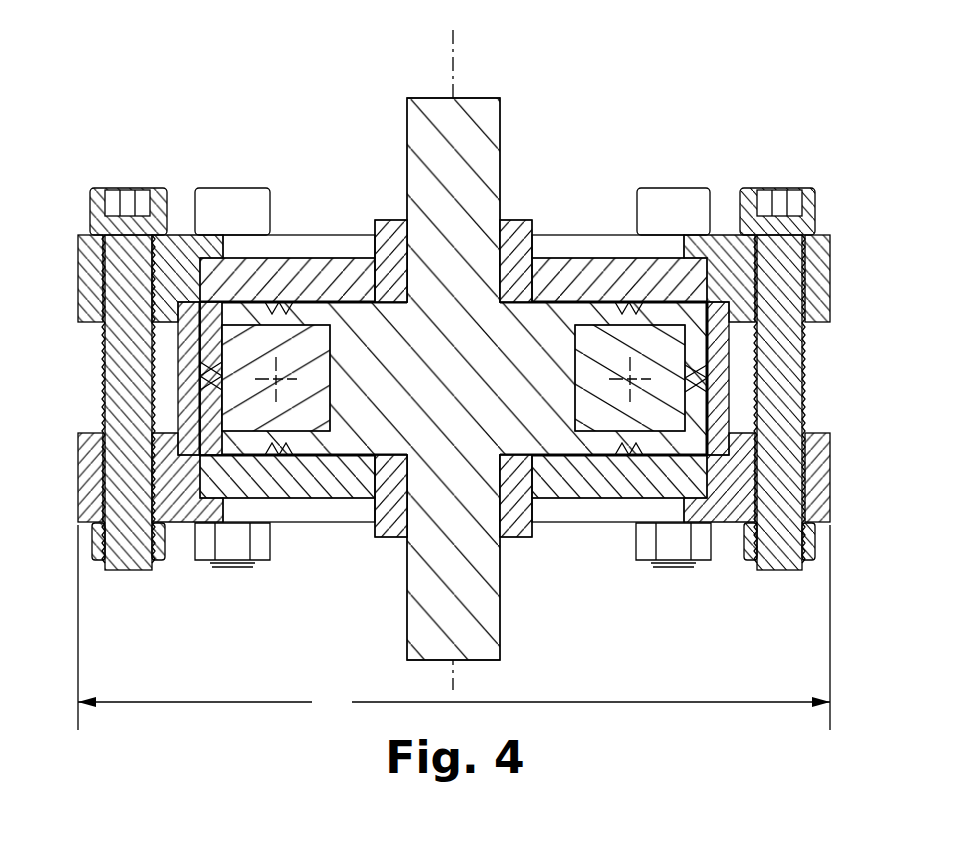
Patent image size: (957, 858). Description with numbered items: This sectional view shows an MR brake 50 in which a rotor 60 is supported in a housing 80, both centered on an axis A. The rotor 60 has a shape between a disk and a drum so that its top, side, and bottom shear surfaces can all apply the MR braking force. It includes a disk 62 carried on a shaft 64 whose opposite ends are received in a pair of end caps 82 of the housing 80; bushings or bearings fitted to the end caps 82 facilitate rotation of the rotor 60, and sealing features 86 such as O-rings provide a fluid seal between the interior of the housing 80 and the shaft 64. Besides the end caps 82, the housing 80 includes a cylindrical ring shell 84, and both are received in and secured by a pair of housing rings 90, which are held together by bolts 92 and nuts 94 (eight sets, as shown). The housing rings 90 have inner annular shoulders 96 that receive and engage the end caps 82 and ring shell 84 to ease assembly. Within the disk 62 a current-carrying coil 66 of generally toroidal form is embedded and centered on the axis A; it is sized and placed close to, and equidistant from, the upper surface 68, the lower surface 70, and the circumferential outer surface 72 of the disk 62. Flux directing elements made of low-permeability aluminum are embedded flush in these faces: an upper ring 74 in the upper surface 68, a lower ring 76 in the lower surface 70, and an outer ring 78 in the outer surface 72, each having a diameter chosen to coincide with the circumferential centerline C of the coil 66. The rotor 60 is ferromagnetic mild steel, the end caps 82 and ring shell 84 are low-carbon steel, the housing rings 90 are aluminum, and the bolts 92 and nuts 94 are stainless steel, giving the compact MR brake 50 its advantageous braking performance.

The MR brake 50 is at (856, 522).
The rotor 60 is at (453, 392).
The disk 62 is at (390, 410).
The shaft 64 is at (474, 148).
The current-carrying coil 66 is at (248, 343).
The upper surface of the disk 68 is at (310, 300).
The lower surface of the disk 70 is at (322, 482).
The outer surface of the disk 72 is at (200, 410).
The upper ring 74 is at (630, 312).
The lower ring 76 is at (627, 440).
The outer ring 78 is at (698, 372).
The housing 80 is at (461, 354).
The end caps 82 is at (353, 268).
The cylindrical ring shell 84 is at (543, 375).
The sealing features 86 is at (398, 242).
The housing rings 90 is at (95, 275).
The bolts 92 is at (200, 195).
The nuts 94 is at (205, 545).
The inner annular shoulders 96 is at (730, 300).
The axis A is at (453, 50).
The circumferential centerline of the coil C is at (300, 378).